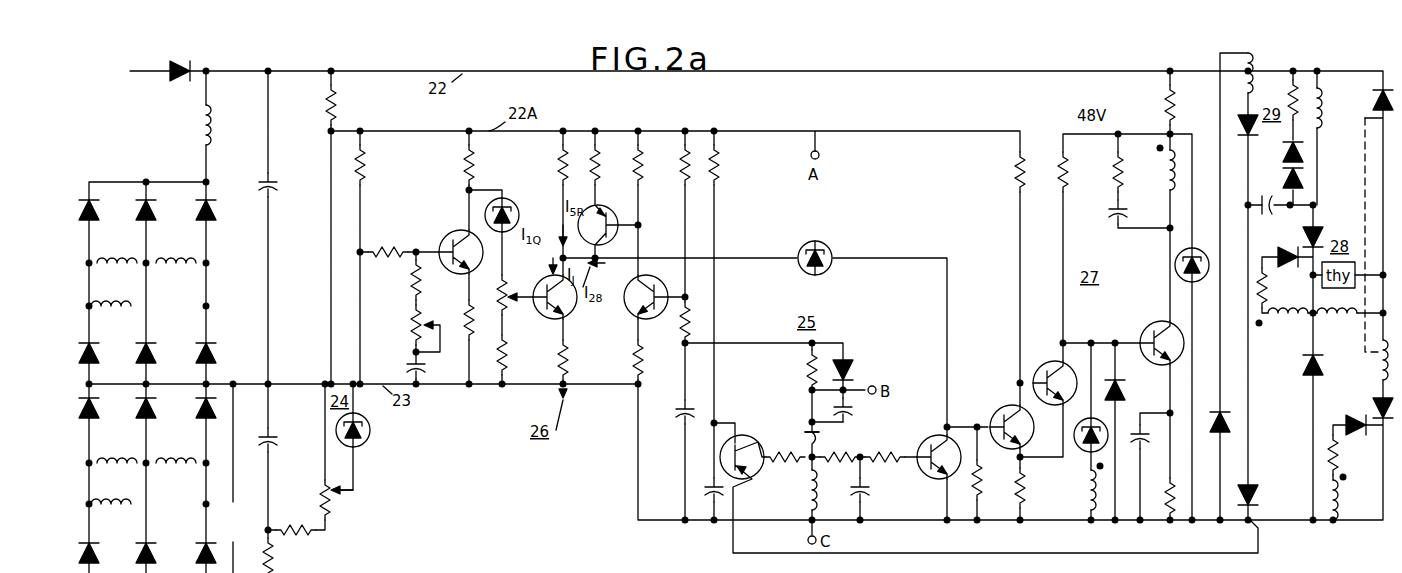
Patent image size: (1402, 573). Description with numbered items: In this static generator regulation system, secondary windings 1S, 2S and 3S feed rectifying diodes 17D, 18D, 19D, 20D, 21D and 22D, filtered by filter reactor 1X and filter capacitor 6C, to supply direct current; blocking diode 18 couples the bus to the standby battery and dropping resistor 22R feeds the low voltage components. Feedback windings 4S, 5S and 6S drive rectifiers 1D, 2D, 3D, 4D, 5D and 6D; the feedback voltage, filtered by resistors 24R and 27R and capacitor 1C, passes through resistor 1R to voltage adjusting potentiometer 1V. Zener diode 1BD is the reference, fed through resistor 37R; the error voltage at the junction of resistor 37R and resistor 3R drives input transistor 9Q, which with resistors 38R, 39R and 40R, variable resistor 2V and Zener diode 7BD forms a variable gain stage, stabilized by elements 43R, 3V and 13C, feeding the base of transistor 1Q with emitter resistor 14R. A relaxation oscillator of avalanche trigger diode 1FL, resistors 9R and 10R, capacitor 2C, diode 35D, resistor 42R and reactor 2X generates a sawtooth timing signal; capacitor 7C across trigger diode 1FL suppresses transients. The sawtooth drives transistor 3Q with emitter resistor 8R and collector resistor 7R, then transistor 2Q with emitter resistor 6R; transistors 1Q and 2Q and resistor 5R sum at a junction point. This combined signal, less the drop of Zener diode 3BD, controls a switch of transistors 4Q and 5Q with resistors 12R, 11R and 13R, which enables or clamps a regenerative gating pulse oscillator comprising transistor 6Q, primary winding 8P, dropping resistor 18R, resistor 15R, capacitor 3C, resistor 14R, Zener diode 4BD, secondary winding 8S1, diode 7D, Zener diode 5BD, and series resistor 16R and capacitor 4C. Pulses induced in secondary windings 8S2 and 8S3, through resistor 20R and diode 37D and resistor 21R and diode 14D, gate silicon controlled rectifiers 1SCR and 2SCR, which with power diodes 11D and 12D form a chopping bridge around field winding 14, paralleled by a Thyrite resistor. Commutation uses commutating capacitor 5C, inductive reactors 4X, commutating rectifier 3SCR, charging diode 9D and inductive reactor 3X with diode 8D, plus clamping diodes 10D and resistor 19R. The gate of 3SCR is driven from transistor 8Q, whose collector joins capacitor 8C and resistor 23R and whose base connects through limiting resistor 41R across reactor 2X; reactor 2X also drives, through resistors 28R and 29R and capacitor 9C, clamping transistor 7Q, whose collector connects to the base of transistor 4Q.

The blocking diode 18 is at (181, 82).
The filter reactor 1X is at (224, 125).
The filter capacitor 6C is at (268, 182).
The rectifying diode 17D is at (105, 209).
The rectifying diode 18D is at (162, 209).
The rectifying diode 19D is at (220, 209).
The secondary winding 1S is at (117, 248).
The secondary winding 2S is at (176, 248).
The secondary winding 3S is at (111, 291).
The rectifying diode 20D is at (104, 342).
The rectifying diode 21D is at (161, 342).
The rectifying diode 22D is at (220, 342).
The rectifier 1D is at (99, 411).
The rectifier 2D is at (157, 411).
The rectifier 3D is at (214, 414).
The secondary winding 4S is at (117, 448).
The secondary winding 5S is at (176, 448).
The secondary winding 6S is at (111, 490).
The rectifier 4D is at (98, 544).
The rectifier 5D is at (156, 544).
The rectifier 6D is at (199, 558).
The capacitor 1C is at (275, 435).
The resistor 24R is at (318, 478).
The resistor 1R is at (296, 519).
The resistor 27R is at (286, 555).
The Zener diode 1BD is at (362, 444).
The voltage adjusting potentiometer 1V is at (335, 497).
The dropping resistor 22R is at (352, 105).
The resistor 37R is at (381, 165).
The resistor 40R is at (487, 163).
The input transistor 9Q is at (452, 235).
The resistor 3R is at (388, 242).
The resistor 43R is at (410, 283).
The resistor 38R is at (464, 324).
The variable resistor 3V is at (406, 326).
The capacitor 13C is at (395, 367).
The Zener diode 7BD is at (516, 211).
The variable resistor 2V is at (512, 285).
The resistor 39R is at (518, 355).
The transistor 1Q is at (564, 301).
The resistor 14R is at (830, 263).
The resistor 5R is at (557, 172).
The emitter resistor 6R is at (605, 160).
The transistor 2Q is at (602, 210).
The resistor 9R is at (680, 168).
The collector resistor 7R is at (650, 170).
The transistor 3Q is at (646, 305).
The emitter resistor 8R is at (650, 360).
The resistor 10R is at (695, 312).
The resistor 23R is at (734, 165).
The Zener diode 3BD is at (826, 247).
The resistor 42R is at (804, 370).
The diode 35D is at (850, 368).
The capacitor 7C is at (854, 414).
The capacitor 2C is at (679, 417).
The transistor 8Q is at (758, 443).
The avalanche trigger diode 1FL is at (805, 437).
The limiting resistor 41R is at (785, 464).
The resistor 29R is at (840, 447).
The inductive reactor 2X is at (807, 488).
The capacitor 8C is at (704, 482).
The resistor 28R is at (885, 464).
The capacitor 9C is at (869, 494).
The clamping transistor 7Q is at (923, 443).
The resistor 11R is at (992, 465).
The transistor 4Q is at (998, 406).
The resistor 13R is at (1037, 488).
The secondary winding 8S1 is at (1086, 485).
The transistor 5Q is at (1056, 356).
The Zener diode 4BD is at (1085, 415).
The transistor 6Q is at (1153, 320).
The diode 7D is at (1122, 398).
The Zener diode 5BD is at (1175, 262).
The capacitor 3C is at (1146, 444).
The resistor 15R is at (1172, 505).
The resistor 12R is at (1012, 164).
The dropping resistor 18R is at (1164, 105).
The resistor 16R is at (1112, 172).
The capacitor 4C is at (1104, 214).
The primary winding 8P is at (1155, 170).
The diode 9D is at (1236, 126).
The inductive reactor 3X is at (1253, 66).
The resistor 19R is at (1276, 100).
The series connected diodes 10D is at (1305, 171).
The first power diode 11D is at (1373, 100).
The inductive reactor 4X is at (1322, 125).
The commutating capacitor 5C is at (1261, 200).
The silicon controlled rectifier 1SCR is at (1330, 232).
The diode 37D is at (1275, 250).
The resistor 20R is at (1279, 288).
The second secondary winding 8S2 is at (1288, 324).
The field winding 14 is at (1350, 318).
The second power diode 12D is at (1304, 370).
The silicon controlled rectifier 2SCR is at (1375, 398).
The diode 8D is at (1228, 422).
The resistor 21R is at (1318, 454).
The diode 14D is at (1360, 432).
The commutating silicon controlled rectifier 3SCR is at (1270, 488).
The third secondary winding 8S3 is at (1352, 500).